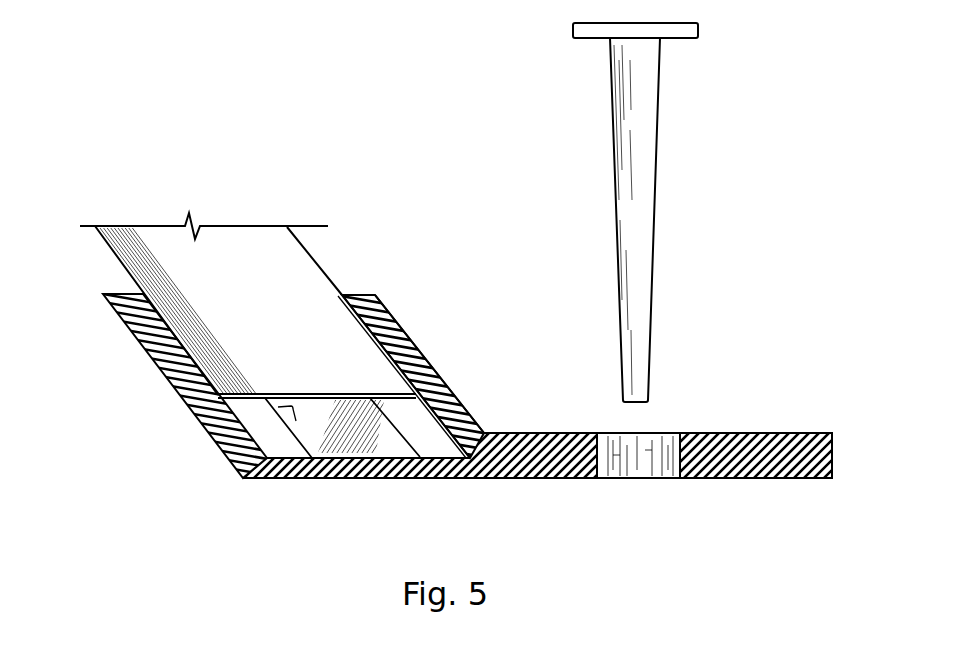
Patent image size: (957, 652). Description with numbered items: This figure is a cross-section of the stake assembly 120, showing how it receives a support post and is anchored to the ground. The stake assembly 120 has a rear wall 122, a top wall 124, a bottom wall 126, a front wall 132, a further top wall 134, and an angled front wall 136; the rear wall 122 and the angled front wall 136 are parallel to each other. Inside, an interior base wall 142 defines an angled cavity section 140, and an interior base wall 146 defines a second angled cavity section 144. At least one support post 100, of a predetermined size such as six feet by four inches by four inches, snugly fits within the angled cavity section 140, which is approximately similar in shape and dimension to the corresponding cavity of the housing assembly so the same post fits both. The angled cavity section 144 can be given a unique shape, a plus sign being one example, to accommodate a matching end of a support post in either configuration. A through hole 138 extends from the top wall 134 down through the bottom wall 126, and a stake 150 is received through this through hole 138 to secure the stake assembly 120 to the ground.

The support post 100 is at (116, 275).
The stake assembly 120 is at (388, 292).
The rear wall 122 is at (147, 353).
The top wall 124 is at (360, 294).
The bottom wall 126 is at (298, 482).
The front wall 132 is at (832, 452).
The top wall 134 is at (763, 433).
The angled front wall 136 is at (447, 386).
The through hole 138 is at (603, 435).
The angled cavity section 140 is at (357, 321).
The interior base wall 142 is at (325, 392).
The angled cavity section 144 is at (287, 414).
The interior base wall 146 is at (398, 457).
The stake 150 is at (665, 93).